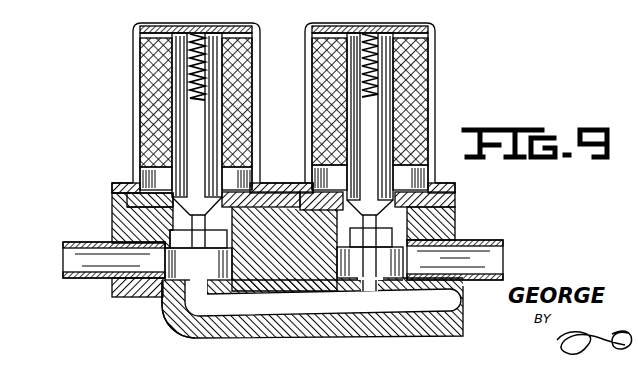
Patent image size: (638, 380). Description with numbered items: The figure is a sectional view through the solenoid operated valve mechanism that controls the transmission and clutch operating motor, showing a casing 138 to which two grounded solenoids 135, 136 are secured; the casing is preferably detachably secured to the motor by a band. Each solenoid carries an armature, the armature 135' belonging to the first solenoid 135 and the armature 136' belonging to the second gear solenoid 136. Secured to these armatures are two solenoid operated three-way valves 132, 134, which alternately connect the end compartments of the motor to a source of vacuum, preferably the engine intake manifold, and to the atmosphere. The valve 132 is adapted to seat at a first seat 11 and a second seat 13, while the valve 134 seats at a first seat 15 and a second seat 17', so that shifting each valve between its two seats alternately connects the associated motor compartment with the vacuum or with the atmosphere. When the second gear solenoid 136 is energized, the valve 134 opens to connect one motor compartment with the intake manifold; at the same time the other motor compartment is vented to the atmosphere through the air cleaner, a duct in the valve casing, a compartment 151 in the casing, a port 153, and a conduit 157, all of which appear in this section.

The seat 11 is at (177, 236).
The seat 13 is at (182, 283).
The seat 15 is at (389, 236).
The seat 17' is at (385, 306).
The three-way valve 132 is at (163, 283).
The three-way valve 134 is at (352, 263).
The solenoid 135 is at (161, 102).
The armature 135' is at (147, 140).
The solenoid 136 is at (400, 101).
The armature 136' is at (418, 140).
The casing 138 is at (240, 327).
The compartment 151 is at (133, 177).
The port 153 is at (224, 237).
The conduit 157 is at (78, 258).